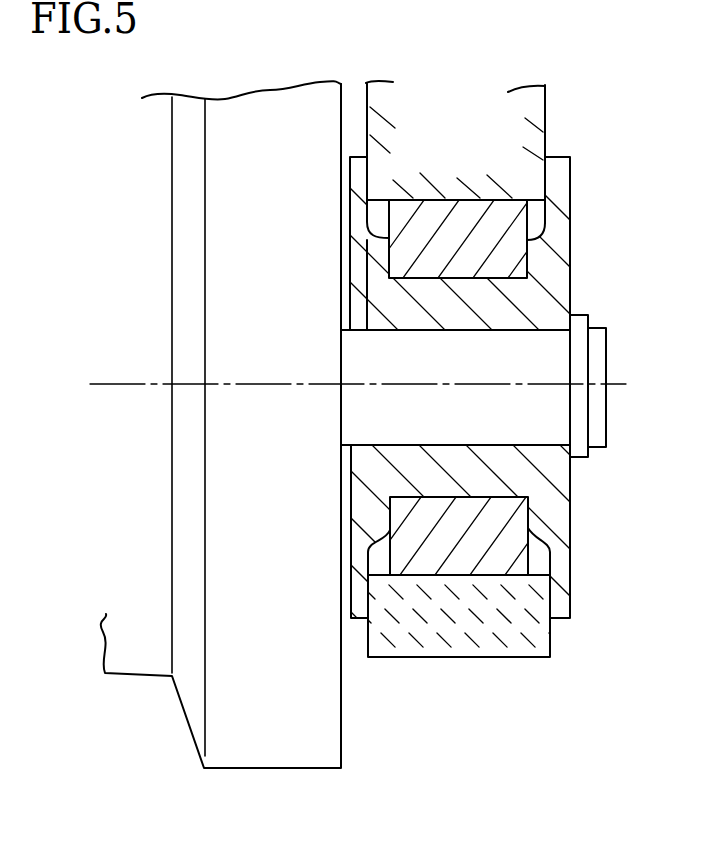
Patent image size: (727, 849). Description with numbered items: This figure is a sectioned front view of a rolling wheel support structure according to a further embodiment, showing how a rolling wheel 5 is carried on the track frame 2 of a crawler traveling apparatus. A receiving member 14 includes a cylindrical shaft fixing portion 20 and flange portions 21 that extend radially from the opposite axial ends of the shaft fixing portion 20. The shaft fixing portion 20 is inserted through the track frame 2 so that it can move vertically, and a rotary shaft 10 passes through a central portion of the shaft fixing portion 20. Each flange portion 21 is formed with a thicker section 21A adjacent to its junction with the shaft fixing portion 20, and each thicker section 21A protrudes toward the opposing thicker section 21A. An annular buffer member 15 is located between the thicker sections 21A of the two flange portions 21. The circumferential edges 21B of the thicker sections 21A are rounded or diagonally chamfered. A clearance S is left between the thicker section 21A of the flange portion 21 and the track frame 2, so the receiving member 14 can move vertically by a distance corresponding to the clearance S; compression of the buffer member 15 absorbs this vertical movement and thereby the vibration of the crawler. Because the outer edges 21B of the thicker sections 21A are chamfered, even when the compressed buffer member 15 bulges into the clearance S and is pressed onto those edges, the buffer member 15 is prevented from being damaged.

The track frame 2 is at (548, 108).
The rolling wheel 5 is at (262, 748).
The rotary shaft 10 is at (535, 363).
The receiving member 14 is at (593, 233).
The annular buffer member 15 is at (494, 222).
The shaft fixing portion 20 is at (504, 498).
The flange portion 21 is at (350, 190).
The thicker section 21A is at (382, 263).
The circumferential edge 21B is at (370, 214).
The clearance S is at (383, 200).